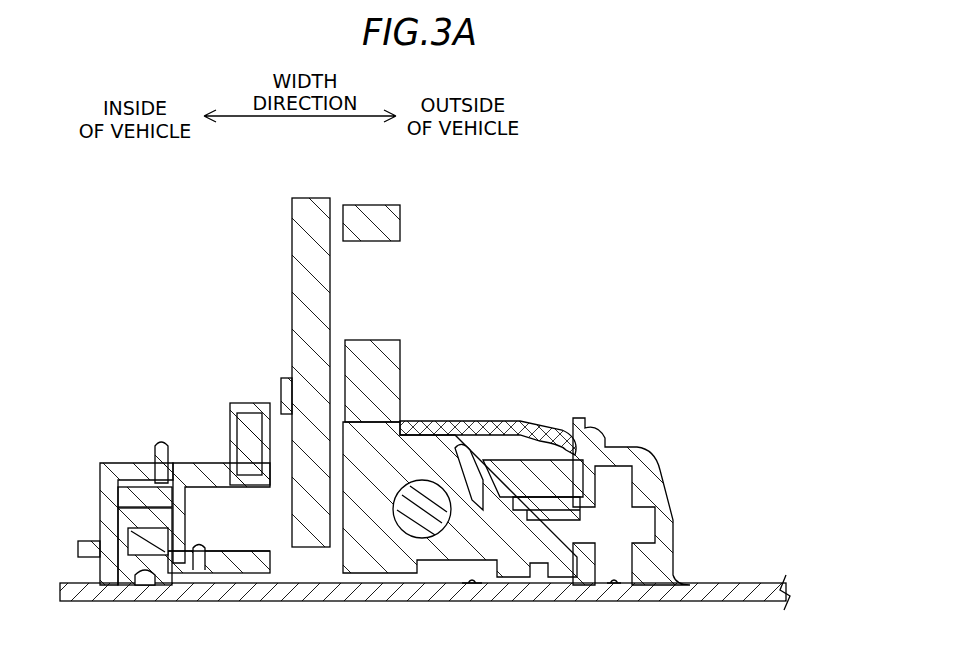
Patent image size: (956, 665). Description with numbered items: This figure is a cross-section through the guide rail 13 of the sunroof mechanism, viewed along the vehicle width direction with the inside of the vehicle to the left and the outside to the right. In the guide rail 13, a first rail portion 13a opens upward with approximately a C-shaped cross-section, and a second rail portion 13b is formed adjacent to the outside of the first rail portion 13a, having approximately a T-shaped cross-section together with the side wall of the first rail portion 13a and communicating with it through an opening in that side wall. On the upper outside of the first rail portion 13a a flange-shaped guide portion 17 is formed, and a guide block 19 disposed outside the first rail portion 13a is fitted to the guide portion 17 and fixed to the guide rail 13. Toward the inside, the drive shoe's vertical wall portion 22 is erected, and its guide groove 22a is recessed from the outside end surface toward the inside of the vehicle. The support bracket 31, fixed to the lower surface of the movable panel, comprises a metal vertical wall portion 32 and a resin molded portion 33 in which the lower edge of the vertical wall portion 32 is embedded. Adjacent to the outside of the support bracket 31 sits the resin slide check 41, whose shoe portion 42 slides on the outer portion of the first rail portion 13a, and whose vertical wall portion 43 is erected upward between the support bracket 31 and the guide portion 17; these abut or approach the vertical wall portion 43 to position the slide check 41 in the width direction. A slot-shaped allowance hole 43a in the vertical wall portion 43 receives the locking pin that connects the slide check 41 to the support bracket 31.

The guide rail 13 is at (720, 583).
The first rail portion 13a is at (470, 586).
The second rail portion 13b is at (614, 586).
The guide portion 17 is at (448, 420).
The guide block 19 is at (550, 430).
The vertical wall portion 22 is at (230, 414).
The guide groove 22a is at (208, 552).
The support bracket 31 is at (292, 232).
The vertical wall portion 32 is at (292, 275).
The resin molded portion 33 is at (292, 505).
The slide check 41 is at (460, 466).
The shoe portion 42 is at (366, 576).
The vertical wall portion 43 is at (400, 352).
The allowance hole 43a is at (385, 241).